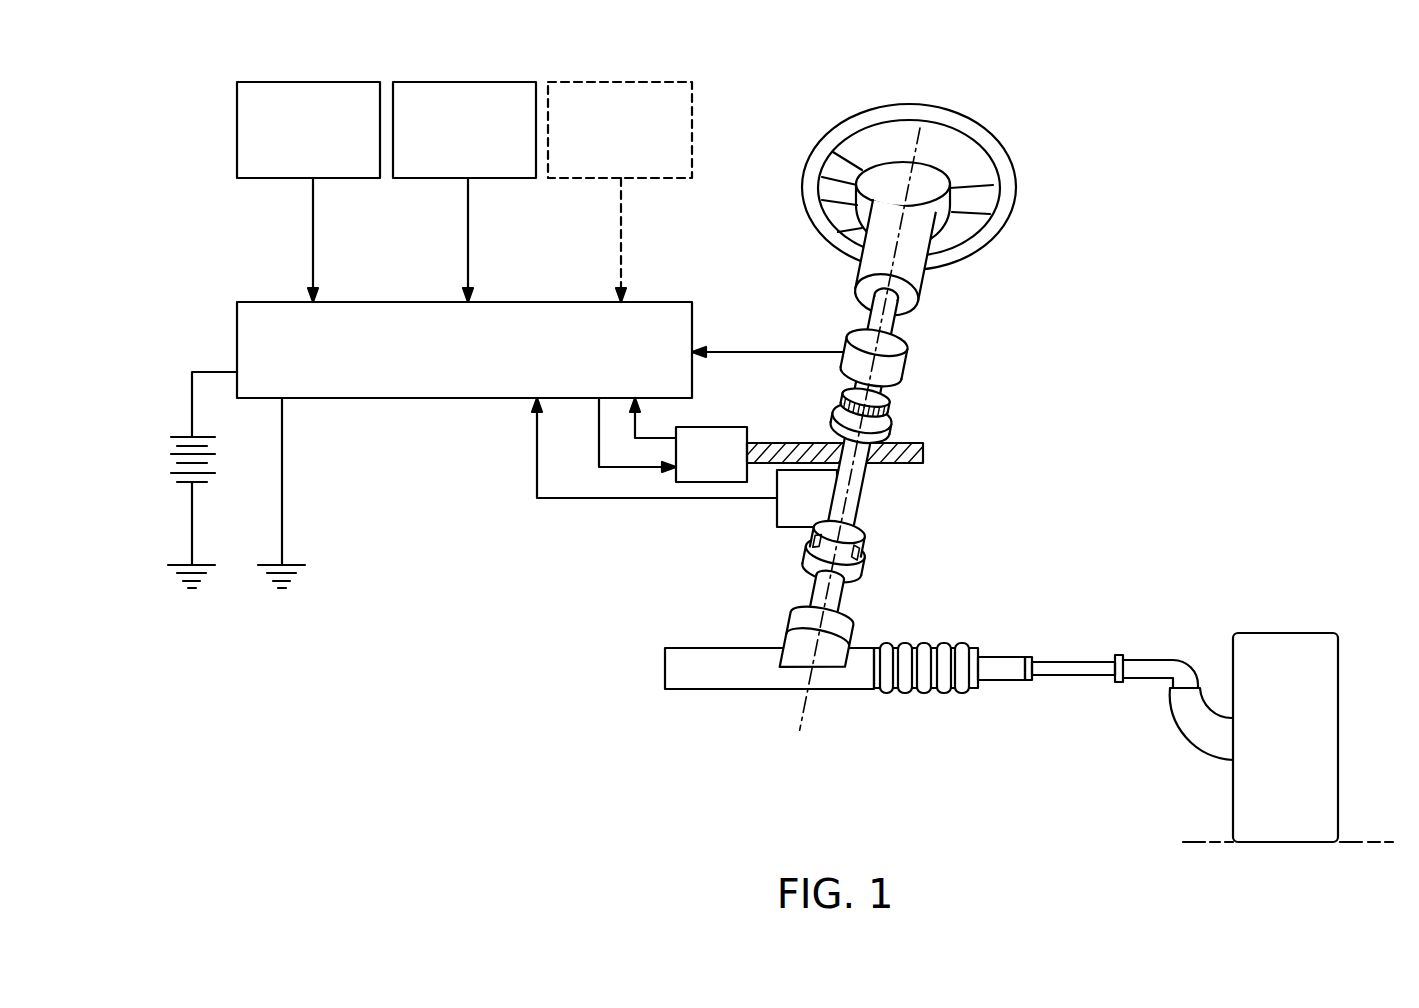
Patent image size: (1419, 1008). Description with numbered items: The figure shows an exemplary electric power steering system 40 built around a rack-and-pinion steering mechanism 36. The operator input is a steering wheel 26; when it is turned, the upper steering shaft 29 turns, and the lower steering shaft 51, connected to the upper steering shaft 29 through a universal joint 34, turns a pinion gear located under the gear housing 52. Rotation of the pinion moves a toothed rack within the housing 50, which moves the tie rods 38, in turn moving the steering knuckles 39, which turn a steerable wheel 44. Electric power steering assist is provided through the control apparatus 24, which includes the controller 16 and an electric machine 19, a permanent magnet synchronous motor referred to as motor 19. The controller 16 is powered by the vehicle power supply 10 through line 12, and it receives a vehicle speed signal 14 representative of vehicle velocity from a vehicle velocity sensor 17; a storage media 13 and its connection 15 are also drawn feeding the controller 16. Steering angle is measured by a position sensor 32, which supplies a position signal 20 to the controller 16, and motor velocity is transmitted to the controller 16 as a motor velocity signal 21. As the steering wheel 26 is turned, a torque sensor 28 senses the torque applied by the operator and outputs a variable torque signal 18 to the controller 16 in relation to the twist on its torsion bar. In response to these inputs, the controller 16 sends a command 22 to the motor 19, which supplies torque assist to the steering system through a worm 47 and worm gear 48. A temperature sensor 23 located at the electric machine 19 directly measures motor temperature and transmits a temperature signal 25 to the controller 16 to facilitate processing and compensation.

The vehicle power supply 10 is at (170, 455).
The line 12 is at (212, 372).
The storage media 13 is at (313, 82).
The vehicle speed signal 14 is at (468, 230).
The storage media signal line 15 is at (313, 230).
The controller 16 is at (388, 398).
The vehicle velocity sensor 17 is at (463, 82).
The torque signal 18 is at (745, 352).
The electric machine 19 is at (735, 427).
The position signal 20 is at (640, 500).
The motor velocity signal 21 is at (632, 427).
The command 22 is at (615, 470).
The temperature sensor 23 is at (612, 82).
The control apparatus 24 is at (1112, 332).
The temperature signal 25 is at (621, 232).
The steering wheel 26 is at (983, 136).
The torque sensor 28 is at (900, 352).
The upper steering shaft 29 is at (893, 302).
The position sensor 32 is at (777, 512).
The universal joint 34 is at (862, 548).
The steering mechanism 36 is at (952, 633).
The tie rod 38 is at (1067, 668).
The steering knuckle 39 is at (1195, 730).
The electric power steering system 40 is at (1224, 452).
The steerable wheel 44 is at (1305, 652).
The worm 47 is at (925, 452).
The worm gear 48 is at (883, 412).
The housing 50 is at (693, 672).
The lower steering shaft 51 is at (835, 600).
The gear housing 52 is at (797, 632).